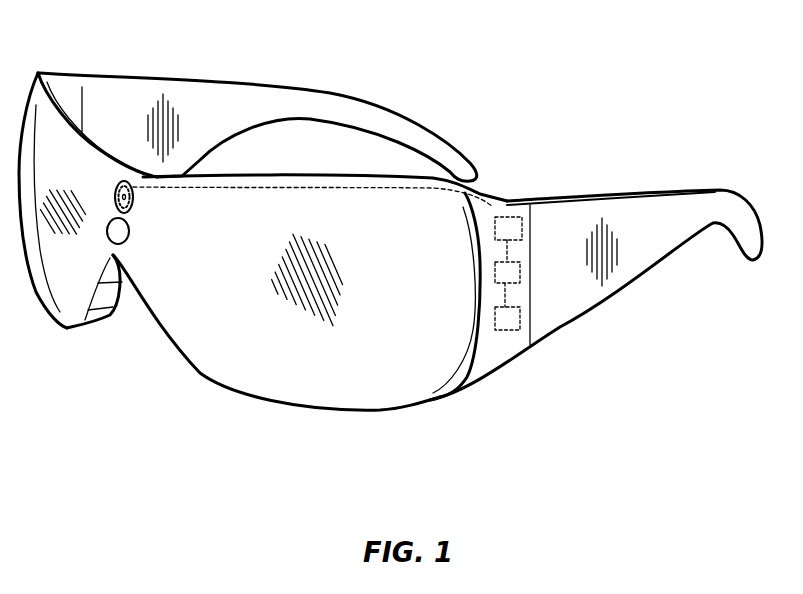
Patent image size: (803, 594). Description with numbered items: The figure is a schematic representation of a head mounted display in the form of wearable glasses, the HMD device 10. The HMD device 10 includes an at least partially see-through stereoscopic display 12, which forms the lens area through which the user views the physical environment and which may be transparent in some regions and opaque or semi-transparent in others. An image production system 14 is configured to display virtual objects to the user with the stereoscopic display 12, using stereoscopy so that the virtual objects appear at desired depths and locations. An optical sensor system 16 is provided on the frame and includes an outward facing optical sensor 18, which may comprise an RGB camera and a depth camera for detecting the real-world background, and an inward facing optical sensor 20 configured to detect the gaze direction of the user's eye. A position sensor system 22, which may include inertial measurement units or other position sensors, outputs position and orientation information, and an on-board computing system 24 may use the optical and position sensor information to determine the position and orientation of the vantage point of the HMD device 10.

The HMD device 10 is at (434, 72).
The at least partially see-through stereoscopic display 12 is at (188, 332).
The image production system 14 is at (513, 315).
The optical sensor system 16 is at (133, 160).
The outward facing optical sensor 18 is at (133, 203).
The inward facing optical sensor 20 is at (129, 238).
The position sensor system 22 is at (510, 267).
The on-board computing system 24 is at (512, 220).